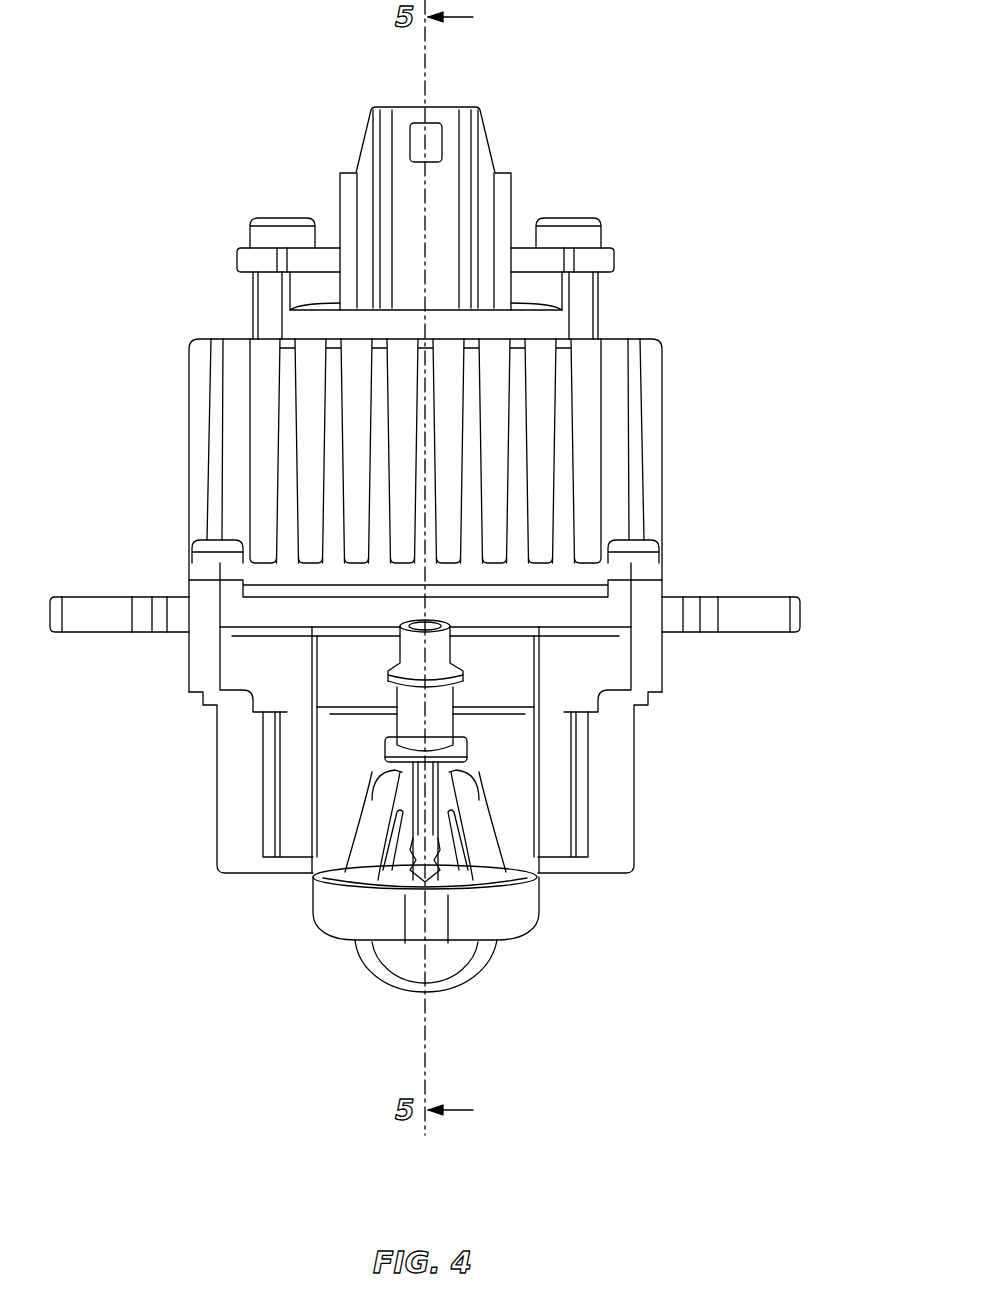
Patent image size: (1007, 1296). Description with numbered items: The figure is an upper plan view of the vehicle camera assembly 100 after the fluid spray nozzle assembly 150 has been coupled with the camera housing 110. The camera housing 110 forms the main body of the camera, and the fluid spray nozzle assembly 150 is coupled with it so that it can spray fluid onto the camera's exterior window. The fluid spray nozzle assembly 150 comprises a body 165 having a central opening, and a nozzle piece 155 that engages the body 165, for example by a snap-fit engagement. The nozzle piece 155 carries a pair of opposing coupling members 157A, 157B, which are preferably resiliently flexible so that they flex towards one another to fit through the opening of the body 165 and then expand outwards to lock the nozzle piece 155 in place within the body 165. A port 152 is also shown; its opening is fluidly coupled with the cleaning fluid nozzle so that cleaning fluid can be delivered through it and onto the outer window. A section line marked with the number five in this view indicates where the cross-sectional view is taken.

The vehicle camera assembly 100 is at (713, 226).
The camera housing 110 is at (598, 468).
The fluid spray nozzle assembly 150 is at (298, 925).
The port 152 is at (452, 658).
The nozzle piece 155 is at (472, 962).
The coupling member 157A is at (480, 827).
The coupling member 157B is at (374, 815).
The body 165 is at (518, 901).